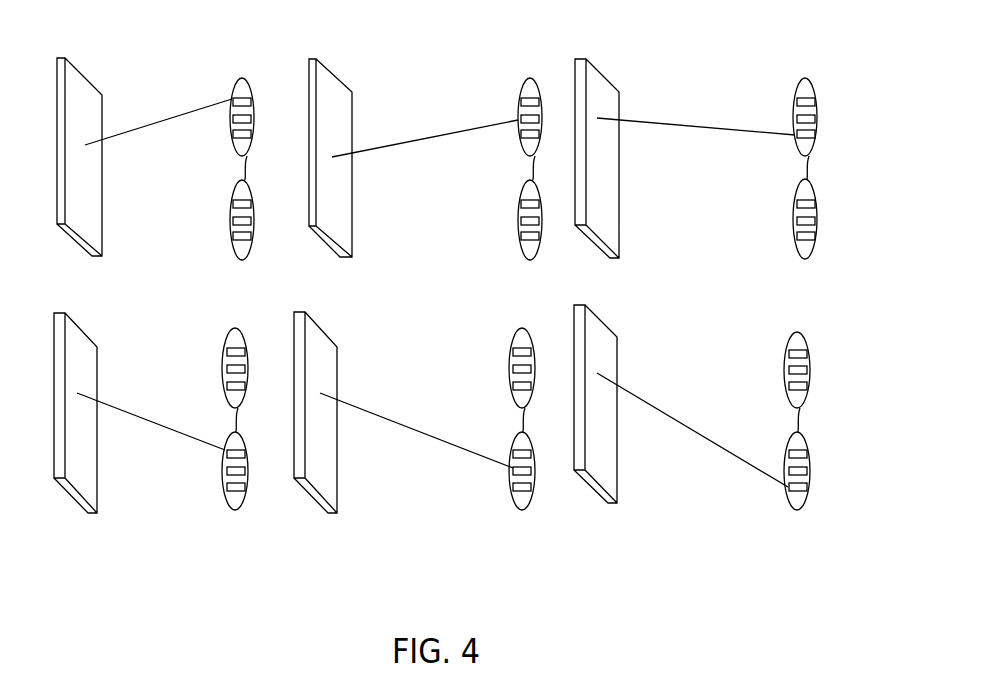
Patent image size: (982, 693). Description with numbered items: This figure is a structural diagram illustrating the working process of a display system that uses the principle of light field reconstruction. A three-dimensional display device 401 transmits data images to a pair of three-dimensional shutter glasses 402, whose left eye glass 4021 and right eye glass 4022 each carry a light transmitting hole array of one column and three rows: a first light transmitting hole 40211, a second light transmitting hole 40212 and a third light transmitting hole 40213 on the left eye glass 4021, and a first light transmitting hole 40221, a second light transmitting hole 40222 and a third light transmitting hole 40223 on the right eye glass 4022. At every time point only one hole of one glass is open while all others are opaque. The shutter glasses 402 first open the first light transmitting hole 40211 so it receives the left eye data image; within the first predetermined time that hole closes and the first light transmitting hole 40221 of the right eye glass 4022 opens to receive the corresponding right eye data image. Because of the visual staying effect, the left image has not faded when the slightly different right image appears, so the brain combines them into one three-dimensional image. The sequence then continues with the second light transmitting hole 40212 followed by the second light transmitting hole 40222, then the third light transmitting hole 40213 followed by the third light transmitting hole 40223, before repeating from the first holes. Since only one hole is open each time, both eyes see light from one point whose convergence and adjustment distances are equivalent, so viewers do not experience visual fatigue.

The 3D display device 401 is at (85, 98).
The 3D shutter glasses 402 is at (223, 83).
The left eye glass 4021 is at (248, 83).
The right eye glass 4022 is at (245, 258).
The first light transmitting hole of the left eye glass 40211 is at (232, 99).
The second light transmitting hole of the left eye glass 40212 is at (517, 112).
The third light transmitting hole of the left eye glass 40213 is at (797, 133).
The first light transmitting hole of the right eye glass 40221 is at (223, 455).
The second light transmitting hole of the right eye glass 40222 is at (510, 475).
The third light transmitting hole of the right eye glass 40223 is at (787, 478).